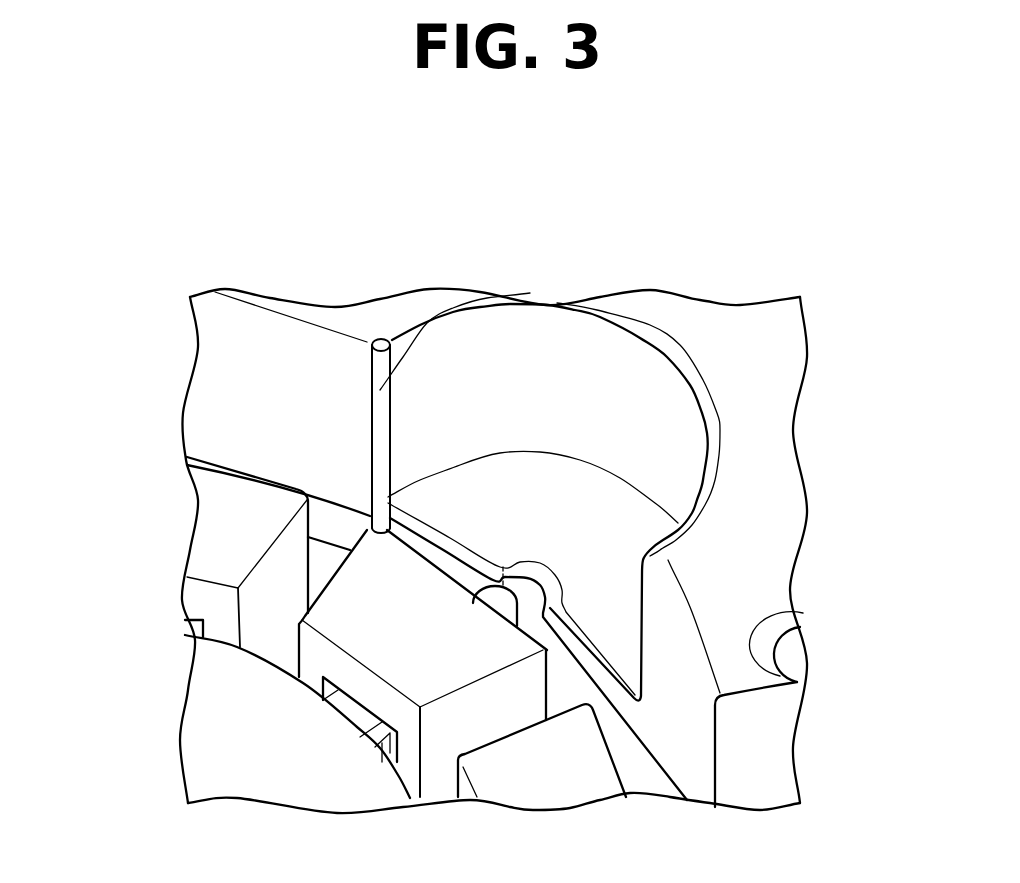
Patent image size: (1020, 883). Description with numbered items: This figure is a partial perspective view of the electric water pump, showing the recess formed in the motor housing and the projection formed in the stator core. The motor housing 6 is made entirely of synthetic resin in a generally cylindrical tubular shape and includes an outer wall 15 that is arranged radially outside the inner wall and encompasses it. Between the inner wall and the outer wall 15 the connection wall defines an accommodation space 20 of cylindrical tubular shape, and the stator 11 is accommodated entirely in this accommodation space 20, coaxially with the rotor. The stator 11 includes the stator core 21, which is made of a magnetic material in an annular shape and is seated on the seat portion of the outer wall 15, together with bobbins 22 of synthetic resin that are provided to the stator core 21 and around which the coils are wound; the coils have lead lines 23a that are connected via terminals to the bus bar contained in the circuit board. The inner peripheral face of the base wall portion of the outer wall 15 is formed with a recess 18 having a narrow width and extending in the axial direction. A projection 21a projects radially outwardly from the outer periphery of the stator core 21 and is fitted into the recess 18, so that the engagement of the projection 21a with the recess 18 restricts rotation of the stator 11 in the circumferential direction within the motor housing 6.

The motor housing 6 is at (822, 351).
The outer wall 15 is at (773, 447).
The stator 11 is at (160, 756).
The accommodation space 20 is at (330, 513).
The stator core 21 is at (325, 565).
The projection 21a is at (490, 570).
The bobbin 22 is at (432, 613).
The lead line 23a is at (385, 385).
The recess 18 is at (550, 580).